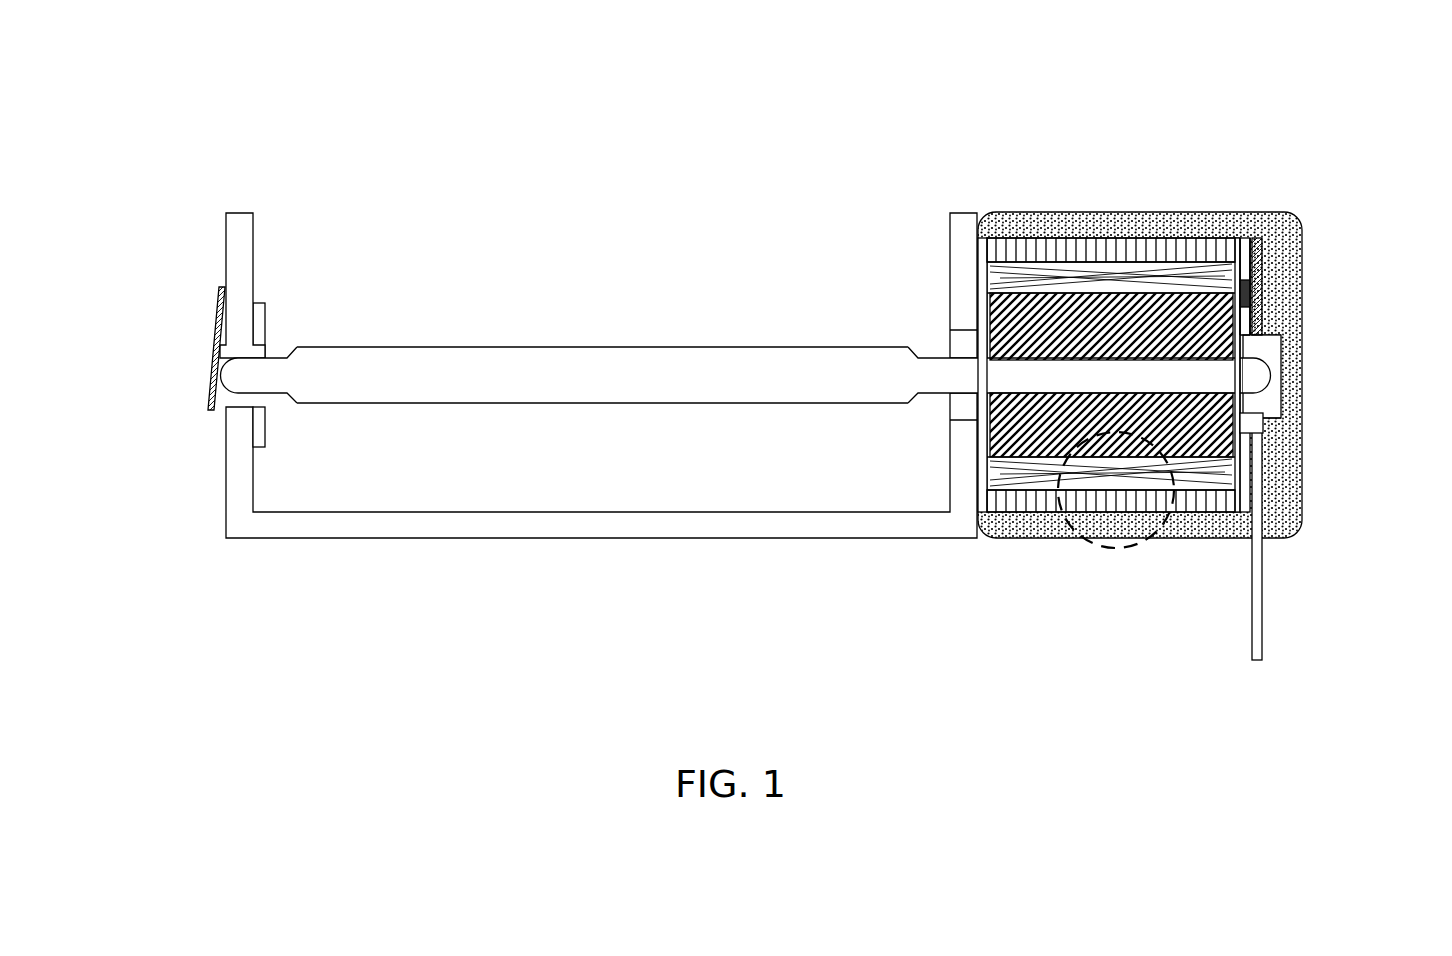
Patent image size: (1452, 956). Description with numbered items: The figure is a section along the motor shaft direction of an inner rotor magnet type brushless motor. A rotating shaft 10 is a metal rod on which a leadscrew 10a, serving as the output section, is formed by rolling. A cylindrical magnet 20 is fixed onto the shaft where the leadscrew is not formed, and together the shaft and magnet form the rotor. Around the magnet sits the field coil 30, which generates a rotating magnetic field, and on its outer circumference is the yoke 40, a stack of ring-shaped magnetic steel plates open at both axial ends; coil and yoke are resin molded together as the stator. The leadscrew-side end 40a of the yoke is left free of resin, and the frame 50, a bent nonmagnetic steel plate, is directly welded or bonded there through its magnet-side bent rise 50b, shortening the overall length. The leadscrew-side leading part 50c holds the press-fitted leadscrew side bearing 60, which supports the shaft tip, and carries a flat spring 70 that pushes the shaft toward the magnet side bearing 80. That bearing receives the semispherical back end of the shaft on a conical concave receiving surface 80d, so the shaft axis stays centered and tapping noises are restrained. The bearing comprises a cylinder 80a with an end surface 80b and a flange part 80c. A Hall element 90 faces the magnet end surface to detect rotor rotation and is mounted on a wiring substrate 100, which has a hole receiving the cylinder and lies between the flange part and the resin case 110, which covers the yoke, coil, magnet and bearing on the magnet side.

The rotating shaft 10 is at (937, 373).
The leadscrew 10a is at (469, 379).
The magnet 20 is at (1007, 322).
The field coil 30 is at (1035, 270).
The yoke 40 is at (1080, 262).
The end of the yoke 40a is at (977, 248).
The frame 50 is at (555, 523).
The bent rise 50b is at (950, 457).
The bent rise 50c is at (227, 473).
The leadscrew side bearing 60 is at (253, 353).
The flat spring 70 is at (220, 347).
The magnet side bearing 80 is at (1302, 470).
The cylinder 80a is at (1277, 337).
The end surface of the cylinder 80b is at (1283, 375).
The flange part 80c is at (1243, 325).
The receiving surface 80d is at (1267, 392).
The Hall element 90 is at (1243, 282).
The wiring substrate 100 is at (1262, 250).
The case 110 is at (1295, 265).